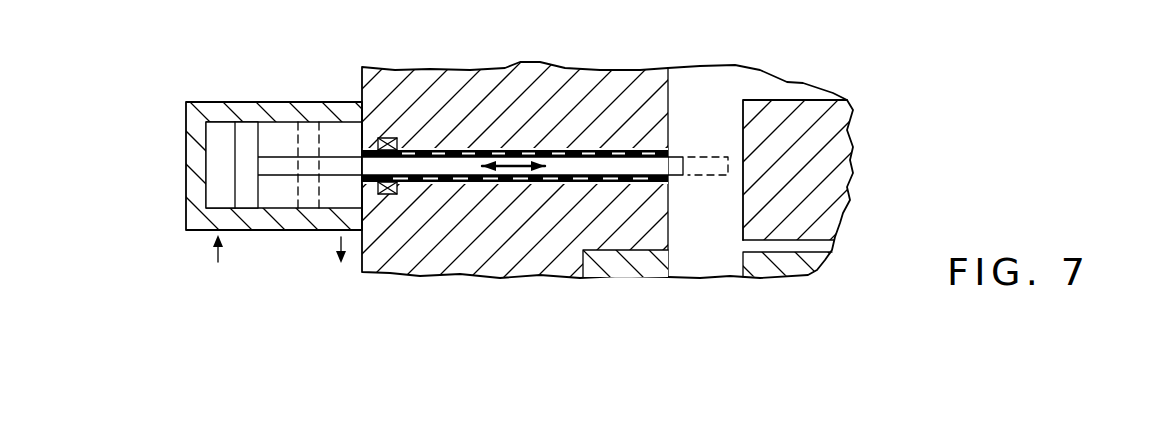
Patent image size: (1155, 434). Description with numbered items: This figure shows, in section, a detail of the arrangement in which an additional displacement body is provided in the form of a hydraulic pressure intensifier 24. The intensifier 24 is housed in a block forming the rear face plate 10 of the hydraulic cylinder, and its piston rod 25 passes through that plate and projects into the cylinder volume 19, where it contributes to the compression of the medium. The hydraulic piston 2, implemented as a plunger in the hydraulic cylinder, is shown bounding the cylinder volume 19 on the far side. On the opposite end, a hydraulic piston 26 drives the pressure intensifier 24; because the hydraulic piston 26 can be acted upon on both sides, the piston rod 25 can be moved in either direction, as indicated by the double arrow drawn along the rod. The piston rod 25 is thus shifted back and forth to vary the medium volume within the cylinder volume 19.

The hydraulic piston 2 is at (828, 165).
The rear face plate 10 is at (400, 97).
The cylinder volume 19 is at (705, 115).
The hydraulic pressure intensifier 24 is at (480, 186).
The piston rod 25 is at (578, 156).
The hydraulic piston 26 is at (244, 140).